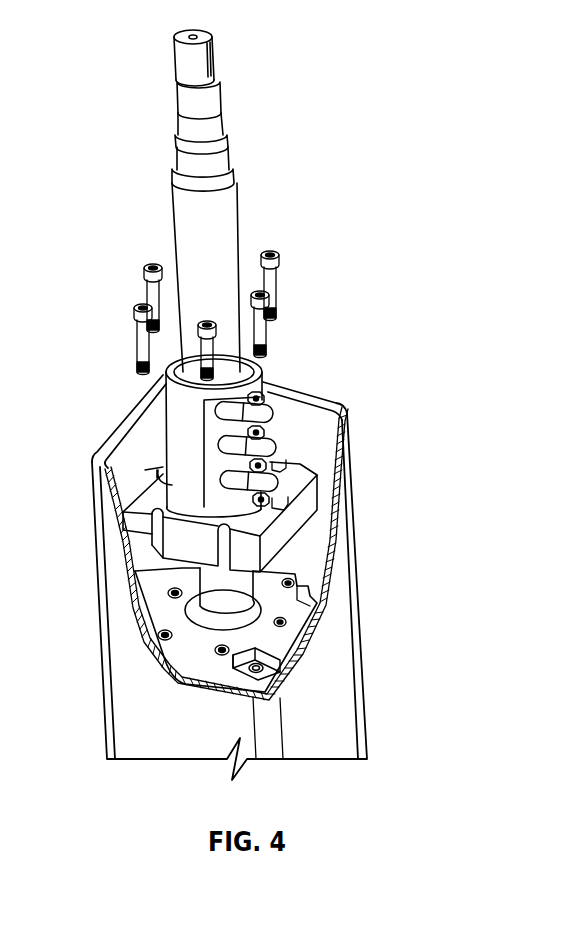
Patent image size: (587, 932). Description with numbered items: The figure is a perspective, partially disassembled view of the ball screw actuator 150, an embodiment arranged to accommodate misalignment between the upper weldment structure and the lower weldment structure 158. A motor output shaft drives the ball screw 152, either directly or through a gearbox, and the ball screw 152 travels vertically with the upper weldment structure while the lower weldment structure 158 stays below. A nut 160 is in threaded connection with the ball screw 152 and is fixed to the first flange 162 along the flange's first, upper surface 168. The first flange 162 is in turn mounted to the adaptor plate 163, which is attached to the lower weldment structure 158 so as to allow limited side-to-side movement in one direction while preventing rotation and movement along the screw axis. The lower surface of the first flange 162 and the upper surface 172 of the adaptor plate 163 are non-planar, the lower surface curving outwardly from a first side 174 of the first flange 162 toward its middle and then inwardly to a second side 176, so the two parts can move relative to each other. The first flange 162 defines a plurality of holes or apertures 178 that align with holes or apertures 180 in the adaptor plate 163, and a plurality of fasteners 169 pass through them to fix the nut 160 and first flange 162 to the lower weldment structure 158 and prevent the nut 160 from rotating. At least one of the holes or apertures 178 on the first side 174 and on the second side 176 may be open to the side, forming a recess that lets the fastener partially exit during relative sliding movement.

The ball screw actuator 150 is at (278, 172).
The ball screw 152 is at (183, 65).
The lower weldment structure 158 is at (355, 704).
The nut 160 is at (180, 415).
The first flange 162 is at (300, 508).
The adaptor plate 163 is at (177, 657).
The first, upper surface 168 is at (303, 475).
The fasteners 169 is at (280, 278).
The upper surface 172 is at (303, 606).
The first side 174 is at (165, 555).
The second side 176 is at (265, 438).
The holes or apertures 178 is at (163, 467).
The holes or apertures 180 is at (200, 653).